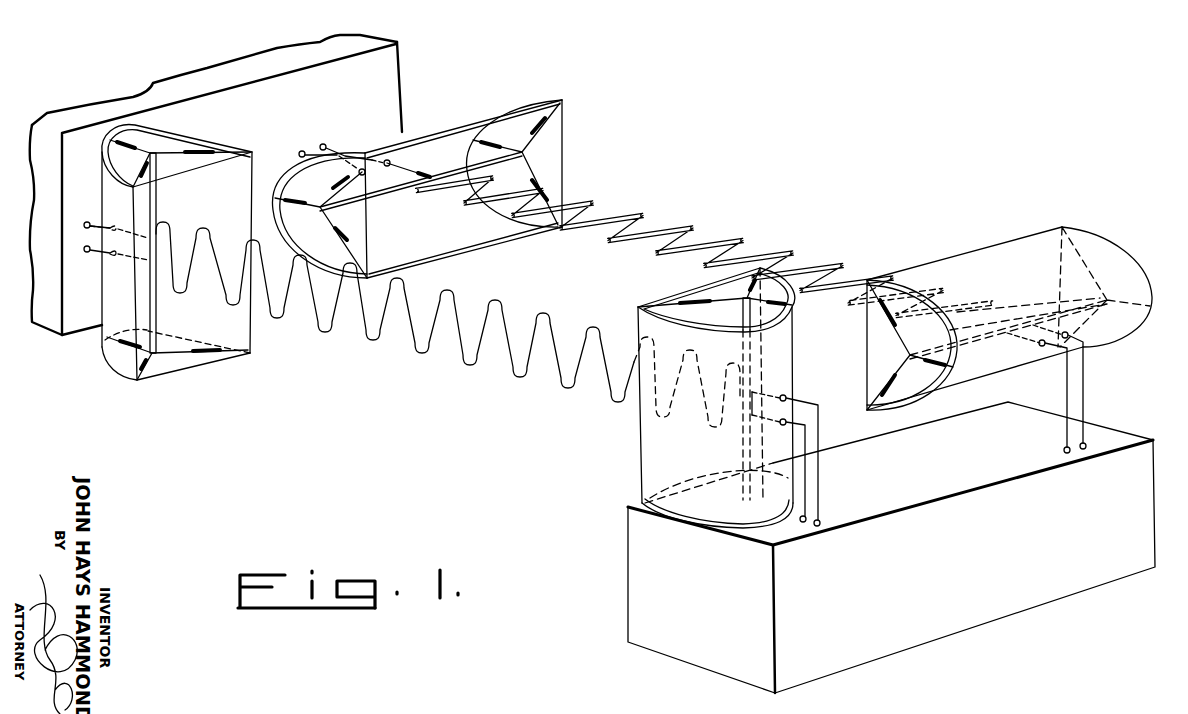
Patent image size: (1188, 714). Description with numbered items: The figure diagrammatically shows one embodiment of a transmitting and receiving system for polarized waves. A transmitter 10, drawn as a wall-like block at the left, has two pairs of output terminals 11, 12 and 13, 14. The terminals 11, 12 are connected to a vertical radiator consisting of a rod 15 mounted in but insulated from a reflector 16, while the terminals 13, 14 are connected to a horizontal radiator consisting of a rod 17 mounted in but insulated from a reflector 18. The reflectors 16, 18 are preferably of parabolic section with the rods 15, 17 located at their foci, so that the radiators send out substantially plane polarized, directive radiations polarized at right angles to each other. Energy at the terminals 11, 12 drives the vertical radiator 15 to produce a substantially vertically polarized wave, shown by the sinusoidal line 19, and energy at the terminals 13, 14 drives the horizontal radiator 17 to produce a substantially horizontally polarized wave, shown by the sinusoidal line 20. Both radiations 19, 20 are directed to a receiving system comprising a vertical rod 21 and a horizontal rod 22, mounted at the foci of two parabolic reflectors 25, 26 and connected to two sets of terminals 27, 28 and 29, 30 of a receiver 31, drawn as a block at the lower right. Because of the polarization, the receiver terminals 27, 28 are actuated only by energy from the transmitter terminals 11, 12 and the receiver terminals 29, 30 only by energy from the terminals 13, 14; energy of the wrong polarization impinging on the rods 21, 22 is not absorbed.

The transmitter 10 is at (405, 48).
The output terminal 11 is at (87, 252).
The output terminal 12 is at (86, 222).
The output terminal 13 is at (299, 152).
The output terminal 14 is at (323, 144).
The rod 15 is at (155, 357).
The reflector 16 is at (118, 360).
The rod 17 is at (524, 153).
The reflector 18 is at (543, 98).
The sinusoidal line 19 is at (470, 372).
The sinusoidal line 20 is at (700, 230).
The vertical rod 21 is at (743, 297).
The horizontal rod 22 is at (907, 355).
The parabolic reflector 25 is at (640, 452).
The parabolic reflector 26 is at (1042, 234).
The terminal 27 is at (802, 523).
The terminal 28 is at (821, 522).
The terminal 29 is at (1063, 450).
The terminal 30 is at (1086, 446).
The receiver 31 is at (983, 620).